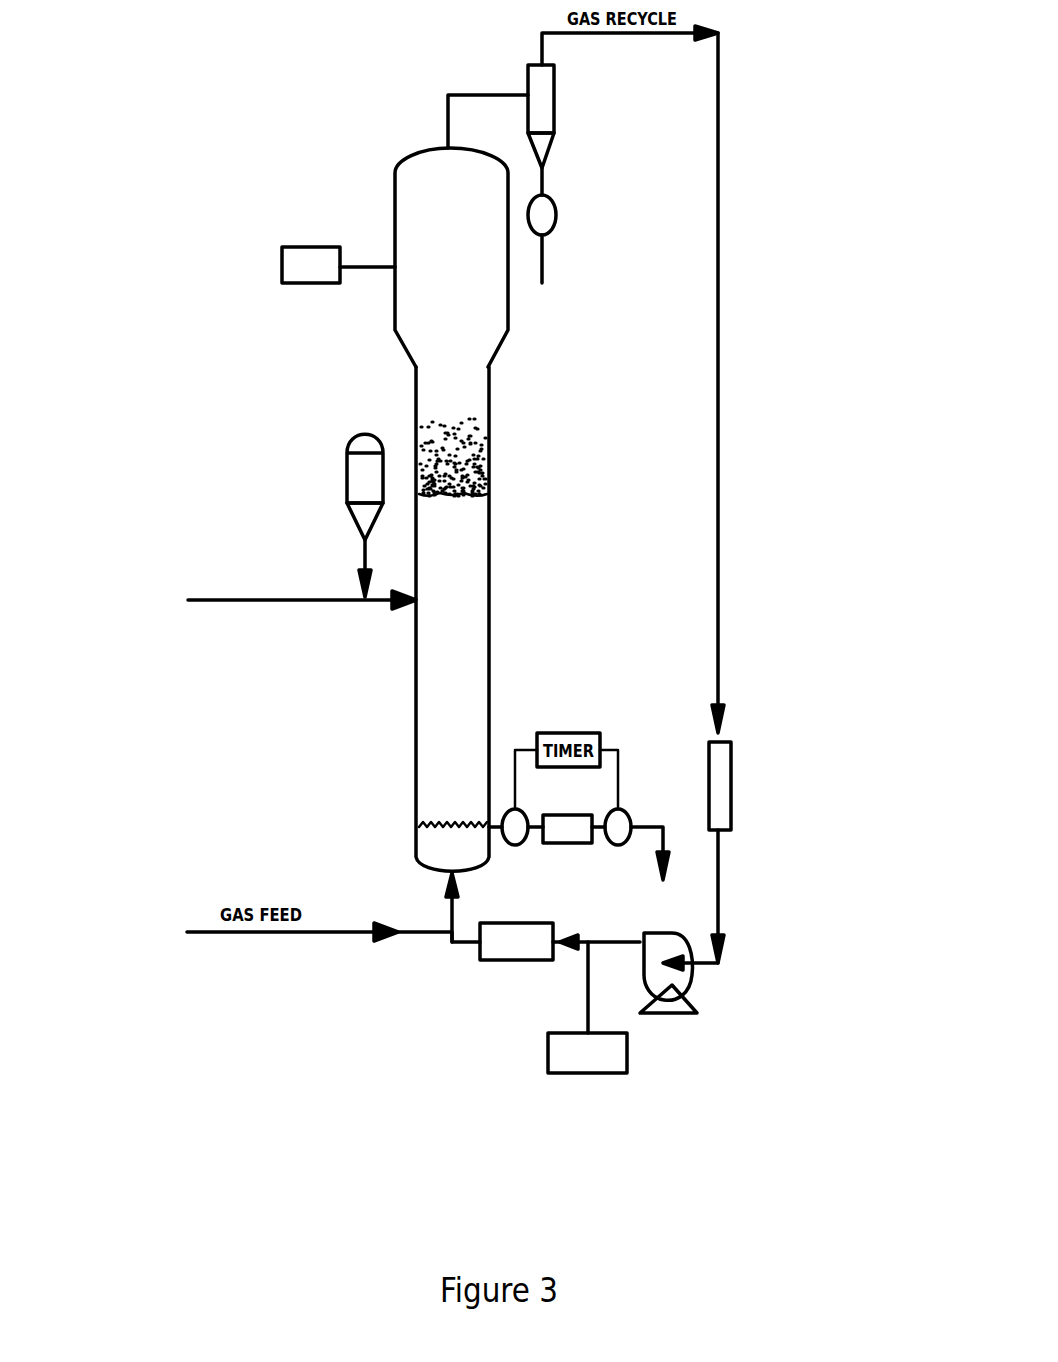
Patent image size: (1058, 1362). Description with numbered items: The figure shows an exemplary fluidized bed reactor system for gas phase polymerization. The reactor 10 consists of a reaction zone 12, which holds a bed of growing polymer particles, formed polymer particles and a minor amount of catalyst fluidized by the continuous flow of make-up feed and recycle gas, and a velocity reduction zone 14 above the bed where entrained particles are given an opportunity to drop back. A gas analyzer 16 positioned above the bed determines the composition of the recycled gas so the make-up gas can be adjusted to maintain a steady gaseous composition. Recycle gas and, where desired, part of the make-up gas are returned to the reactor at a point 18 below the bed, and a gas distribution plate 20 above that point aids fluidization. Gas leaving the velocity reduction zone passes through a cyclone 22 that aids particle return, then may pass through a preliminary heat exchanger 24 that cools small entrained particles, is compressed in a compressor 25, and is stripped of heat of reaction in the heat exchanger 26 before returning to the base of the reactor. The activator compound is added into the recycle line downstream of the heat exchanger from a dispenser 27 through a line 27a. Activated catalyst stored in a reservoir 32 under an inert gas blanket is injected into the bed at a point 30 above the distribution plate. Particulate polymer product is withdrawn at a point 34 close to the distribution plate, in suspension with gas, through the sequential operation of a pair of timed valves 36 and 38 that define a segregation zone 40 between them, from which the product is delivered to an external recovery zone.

The reactor 10 is at (473, 509).
The reaction zone 12 is at (475, 645).
The velocity reduction zone 14 is at (500, 310).
The gas analyzer 16 is at (312, 268).
The point of return 18 is at (448, 874).
The gas distribution plate 20 is at (456, 824).
The cyclone 22 is at (554, 120).
The preliminary heat exchanger 24 is at (731, 780).
The compressor 25 is at (685, 995).
The heat exchanger 26 is at (538, 922).
The dispenser 27 is at (548, 1055).
The line 27a is at (588, 1012).
The catalyst injection point 30 is at (412, 608).
The reservoir 32 is at (353, 478).
The product withdrawal point 34 is at (492, 823).
The timed valve 36 is at (528, 843).
The timed valve 38 is at (626, 812).
The segregation zone 40 is at (564, 800).